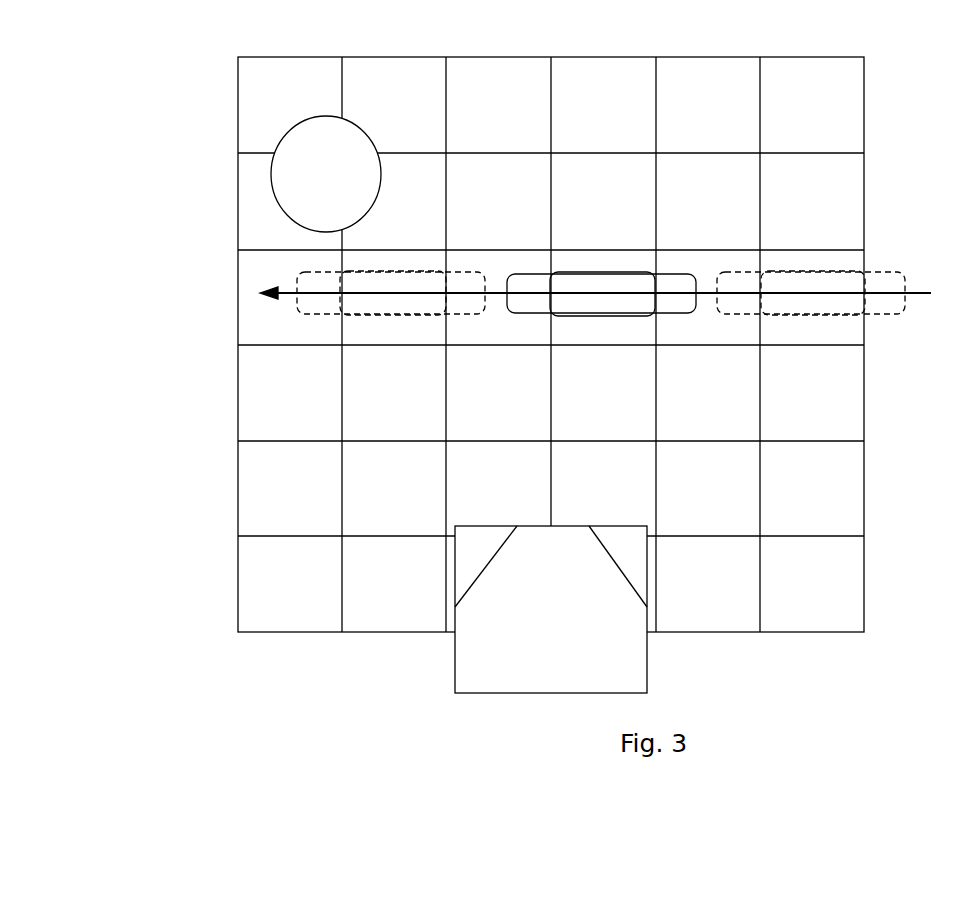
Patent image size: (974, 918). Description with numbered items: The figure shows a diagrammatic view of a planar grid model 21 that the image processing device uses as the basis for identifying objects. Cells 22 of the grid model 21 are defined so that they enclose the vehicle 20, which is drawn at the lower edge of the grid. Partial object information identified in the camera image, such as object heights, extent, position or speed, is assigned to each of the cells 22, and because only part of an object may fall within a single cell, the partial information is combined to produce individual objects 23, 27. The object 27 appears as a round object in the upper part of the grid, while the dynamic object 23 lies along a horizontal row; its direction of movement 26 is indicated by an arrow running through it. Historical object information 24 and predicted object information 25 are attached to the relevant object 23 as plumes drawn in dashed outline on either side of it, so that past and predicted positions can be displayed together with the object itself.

The vehicle 20 is at (502, 648).
The grid model 21 is at (844, 411).
The cells 22 is at (587, 344).
The object 23 is at (623, 298).
The historical object information 24 is at (891, 257).
The predicted object information 25 is at (290, 268).
The direction of movement 26 is at (920, 295).
The object 27 is at (307, 170).